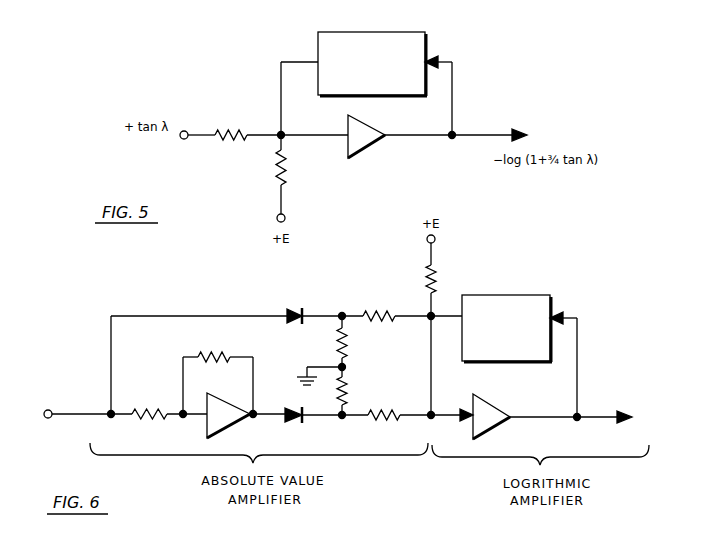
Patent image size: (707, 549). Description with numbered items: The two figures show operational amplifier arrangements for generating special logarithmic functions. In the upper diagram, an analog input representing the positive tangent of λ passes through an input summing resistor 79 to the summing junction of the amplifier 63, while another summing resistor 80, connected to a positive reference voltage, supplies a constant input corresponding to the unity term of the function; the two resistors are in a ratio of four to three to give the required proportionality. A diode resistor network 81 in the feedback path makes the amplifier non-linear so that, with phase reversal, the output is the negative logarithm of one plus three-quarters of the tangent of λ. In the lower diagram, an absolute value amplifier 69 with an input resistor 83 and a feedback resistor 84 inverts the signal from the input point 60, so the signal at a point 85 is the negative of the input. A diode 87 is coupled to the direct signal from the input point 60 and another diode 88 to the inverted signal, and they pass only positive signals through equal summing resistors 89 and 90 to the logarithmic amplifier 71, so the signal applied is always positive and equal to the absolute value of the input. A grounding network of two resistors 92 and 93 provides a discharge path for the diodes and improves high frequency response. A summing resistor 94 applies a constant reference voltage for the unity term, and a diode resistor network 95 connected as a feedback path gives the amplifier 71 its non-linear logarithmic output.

In FIG. 5, the input summing resistor 79 is at (233, 129).
In FIG. 5, the summing resistor 80 is at (287, 161).
In FIG. 5, the amplifier 63 is at (374, 148).
In FIG. 5, the diode resistor network 81 is at (318, 42).
In FIG. 6, the input point 60 is at (57, 411).
In FIG. 6, the input resistor 83 is at (150, 410).
In FIG. 6, the feedback resistor 84 is at (213, 353).
In FIG. 6, the absolute value amplifier 69 is at (204, 431).
In FIG. 6, the point 85 is at (261, 424).
In FIG. 6, the diode 87 is at (292, 308).
In FIG. 6, the diode 88 is at (292, 407).
In FIG. 6, the summing resistor 89 is at (382, 305).
In FIG. 6, the summing resistor 90 is at (384, 410).
In FIG. 6, the resistor 92 is at (348, 340).
In FIG. 6, the resistor 93 is at (348, 382).
In FIG. 6, the summing resistor 94 is at (437, 274).
In FIG. 6, the diode resistor network 95 is at (510, 295).
In FIG. 6, the logarithmic amplifier 71 is at (486, 402).